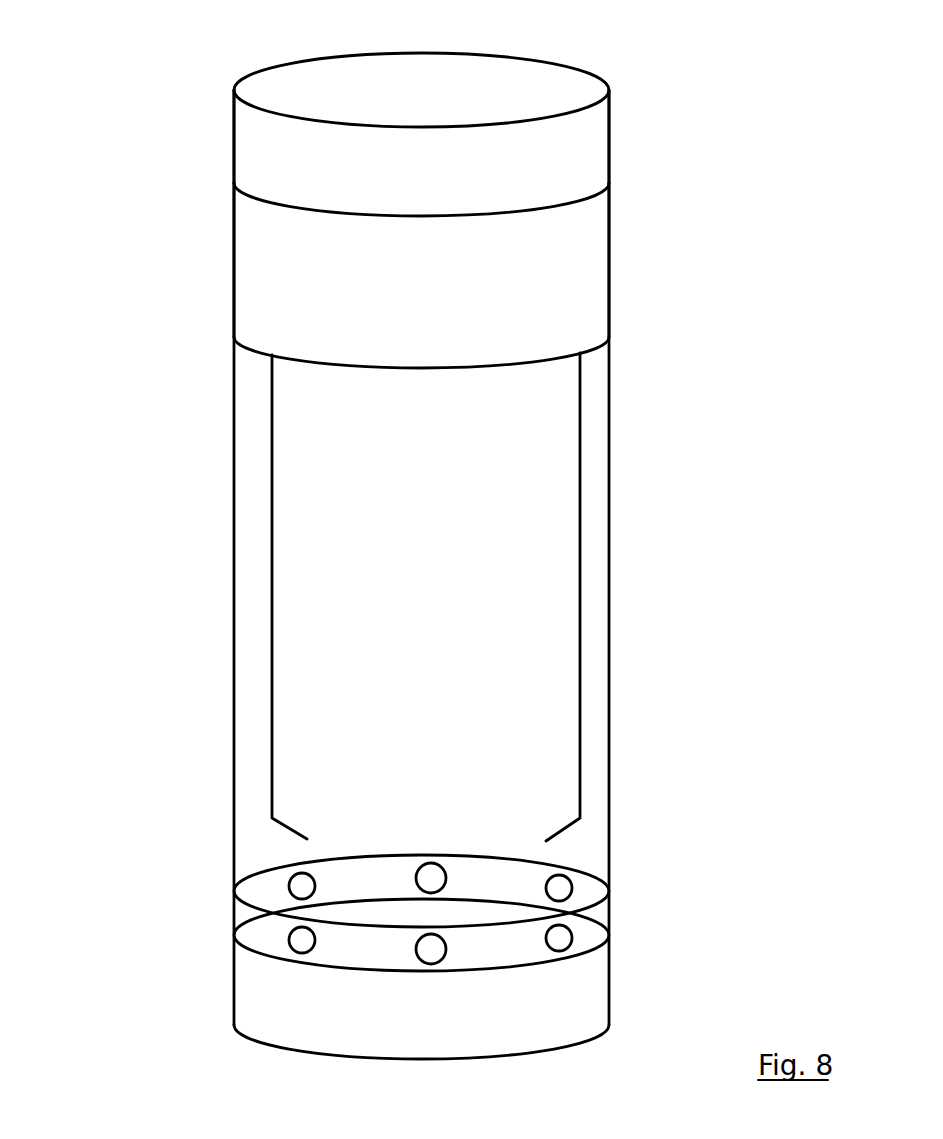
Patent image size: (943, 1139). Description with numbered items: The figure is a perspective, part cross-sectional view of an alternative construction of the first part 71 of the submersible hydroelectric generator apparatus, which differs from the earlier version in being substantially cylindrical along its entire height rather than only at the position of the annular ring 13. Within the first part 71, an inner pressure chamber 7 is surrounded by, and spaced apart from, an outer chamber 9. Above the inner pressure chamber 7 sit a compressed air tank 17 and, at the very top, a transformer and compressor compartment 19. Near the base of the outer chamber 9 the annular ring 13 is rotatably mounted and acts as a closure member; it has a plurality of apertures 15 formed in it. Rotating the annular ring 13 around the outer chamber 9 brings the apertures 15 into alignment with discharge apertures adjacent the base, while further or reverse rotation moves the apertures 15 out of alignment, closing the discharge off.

The first part 71 is at (173, 125).
The transformer and compressor compartment 19 is at (592, 127).
The compressed air tank 17 is at (588, 253).
The outer chamber 9 is at (609, 459).
The inner pressure chamber 7 is at (497, 617).
The annular ring 13 is at (600, 910).
The apertures 15 is at (297, 944).